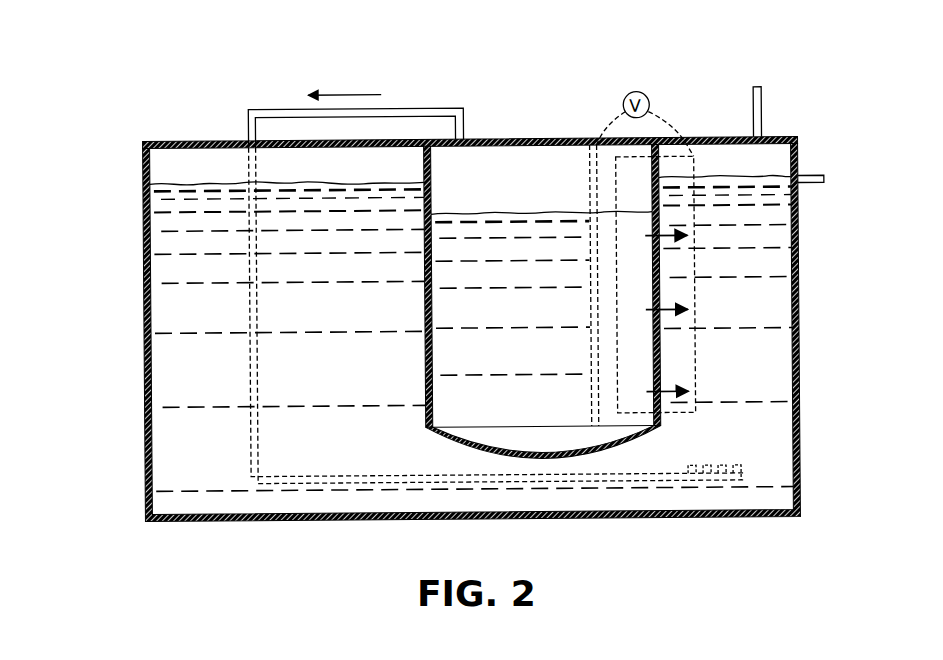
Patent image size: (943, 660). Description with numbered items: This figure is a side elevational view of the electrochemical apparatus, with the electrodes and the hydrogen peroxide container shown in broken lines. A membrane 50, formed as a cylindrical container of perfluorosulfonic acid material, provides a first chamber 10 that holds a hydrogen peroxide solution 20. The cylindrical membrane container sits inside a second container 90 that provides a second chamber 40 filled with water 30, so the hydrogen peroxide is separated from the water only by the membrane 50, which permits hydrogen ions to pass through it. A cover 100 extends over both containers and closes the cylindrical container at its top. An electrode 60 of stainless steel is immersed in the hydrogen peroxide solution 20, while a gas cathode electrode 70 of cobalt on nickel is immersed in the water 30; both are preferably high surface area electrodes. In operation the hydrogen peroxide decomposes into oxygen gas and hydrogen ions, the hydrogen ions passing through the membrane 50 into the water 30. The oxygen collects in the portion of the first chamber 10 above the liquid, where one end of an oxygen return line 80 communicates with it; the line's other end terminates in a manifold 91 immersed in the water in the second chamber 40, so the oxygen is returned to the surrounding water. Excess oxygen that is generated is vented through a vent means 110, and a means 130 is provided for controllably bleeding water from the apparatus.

The first chamber 10 is at (541, 319).
The hydrogen peroxide solution 20 is at (540, 205).
The water 30 is at (187, 176).
The second chamber 40 is at (220, 320).
The membrane 50 is at (433, 213).
The electrode 60 is at (583, 277).
The gas cathode electrode 70 is at (695, 318).
The oxygen return line 80 is at (410, 109).
The second container 90 is at (800, 377).
The manifold 91 is at (299, 484).
The cover 100 is at (214, 139).
The vent means 110 is at (756, 103).
The means for controllably bleeding water 130 is at (846, 157).